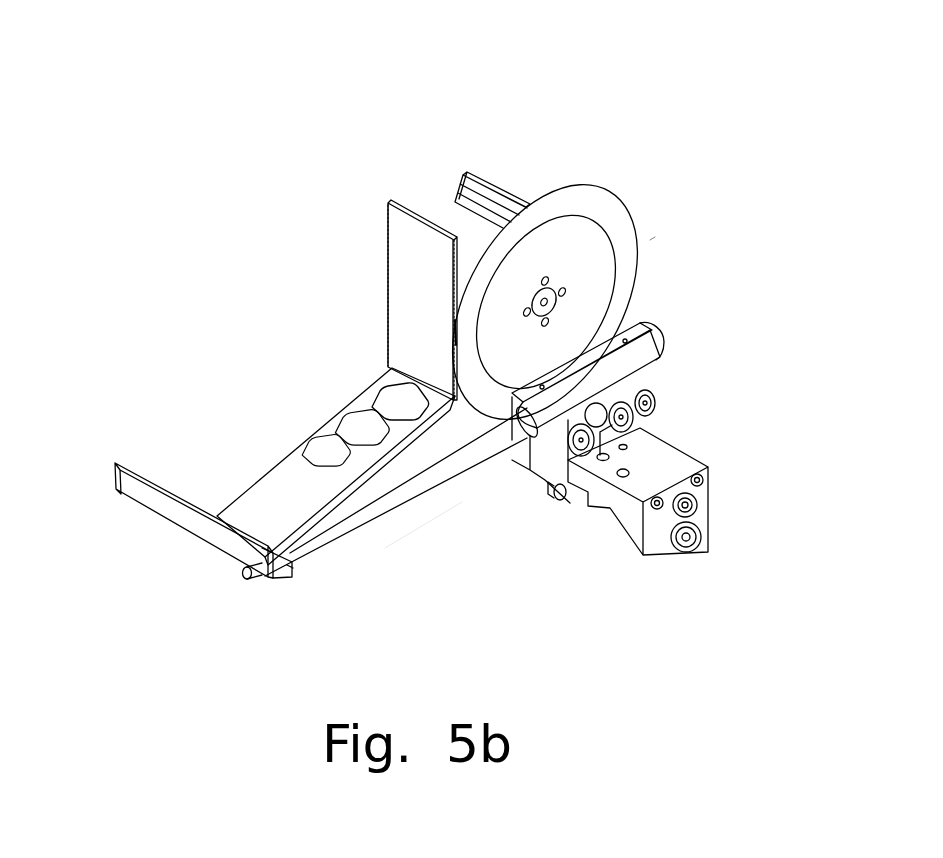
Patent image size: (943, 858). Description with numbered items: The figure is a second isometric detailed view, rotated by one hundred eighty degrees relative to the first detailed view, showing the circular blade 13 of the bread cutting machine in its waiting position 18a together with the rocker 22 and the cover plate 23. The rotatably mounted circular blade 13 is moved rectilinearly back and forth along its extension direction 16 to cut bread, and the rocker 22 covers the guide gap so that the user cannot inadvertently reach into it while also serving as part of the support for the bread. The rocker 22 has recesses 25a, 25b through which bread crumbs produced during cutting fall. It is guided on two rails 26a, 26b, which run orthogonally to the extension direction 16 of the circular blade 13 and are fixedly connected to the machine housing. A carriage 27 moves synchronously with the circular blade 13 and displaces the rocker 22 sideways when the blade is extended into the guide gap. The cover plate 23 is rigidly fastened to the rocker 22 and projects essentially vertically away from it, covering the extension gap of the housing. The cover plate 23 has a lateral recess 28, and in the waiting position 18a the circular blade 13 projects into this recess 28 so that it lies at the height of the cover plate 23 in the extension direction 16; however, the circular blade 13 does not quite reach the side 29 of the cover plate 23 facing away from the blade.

The circular blade 13 is at (613, 202).
The extension direction 16 is at (392, 538).
The waiting position 18a is at (661, 226).
The rocker 22 is at (250, 505).
The cover plate 23 is at (432, 204).
The recess 25a is at (303, 448).
The recess 25b is at (347, 419).
The rail 26a is at (195, 530).
The rail 26b is at (483, 187).
The carriage 27 is at (539, 478).
The lateral recess 28 is at (439, 324).
The side of the cover plate 29 is at (411, 240).